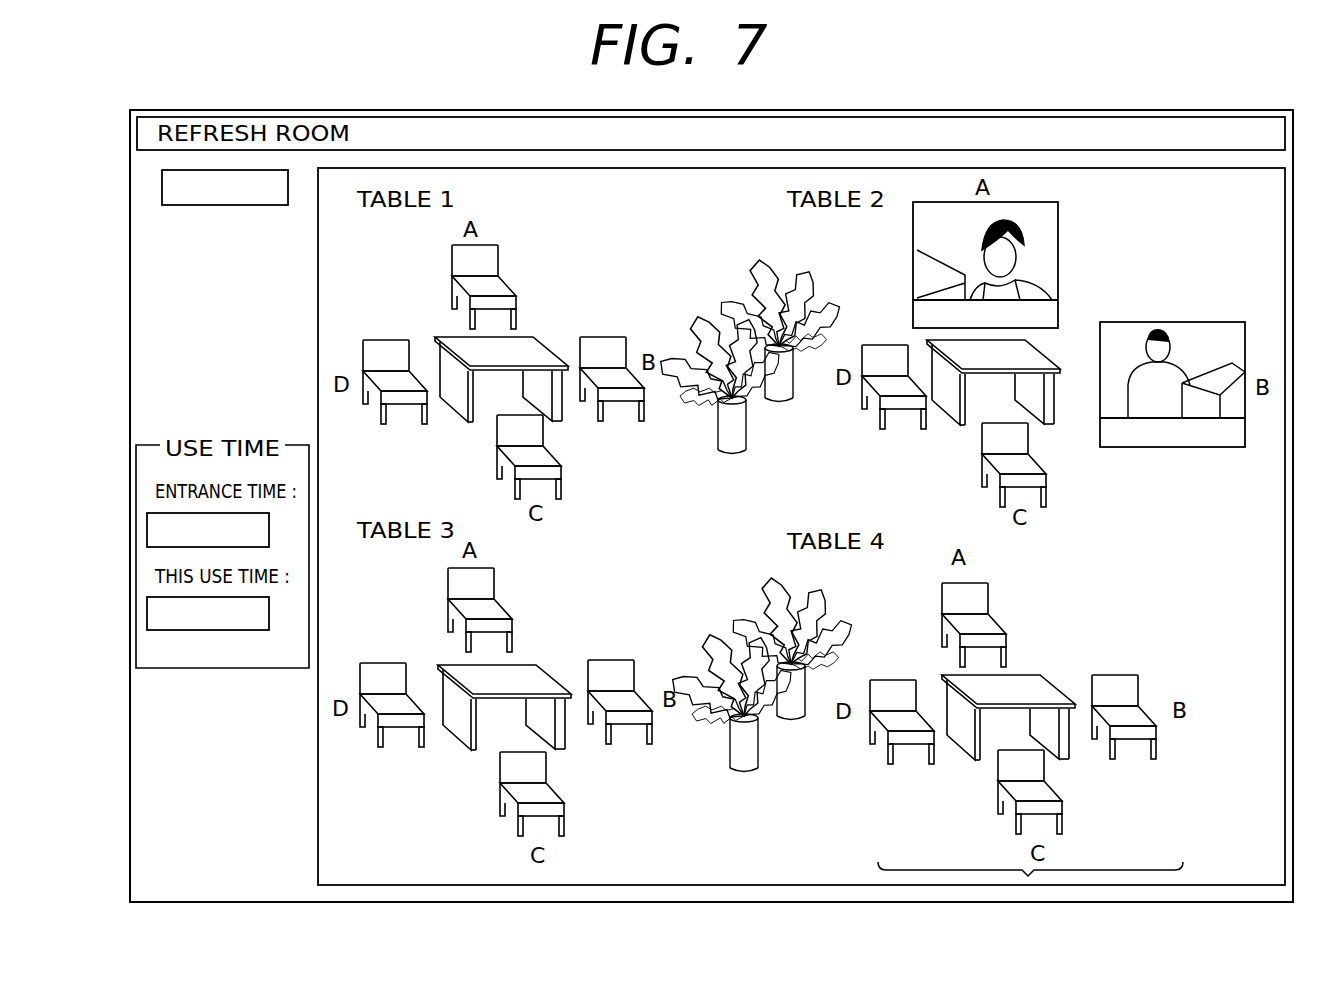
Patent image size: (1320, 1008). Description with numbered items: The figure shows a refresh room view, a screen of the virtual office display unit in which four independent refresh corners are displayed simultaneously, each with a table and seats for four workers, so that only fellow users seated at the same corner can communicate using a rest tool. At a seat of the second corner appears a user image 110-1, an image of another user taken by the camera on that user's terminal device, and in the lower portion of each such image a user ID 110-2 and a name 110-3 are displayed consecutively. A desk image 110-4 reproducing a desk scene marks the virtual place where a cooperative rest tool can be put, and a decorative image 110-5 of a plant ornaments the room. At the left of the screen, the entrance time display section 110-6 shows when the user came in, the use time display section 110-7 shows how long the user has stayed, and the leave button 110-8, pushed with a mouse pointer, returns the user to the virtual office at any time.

The user image 110-1 is at (1047, 237).
The user ID 110-2 is at (1130, 447).
The name 110-3 is at (1227, 447).
The desk image 110-4 is at (953, 405).
The decorative image 110-5 is at (704, 296).
The entrance time display section 110-6 is at (147, 535).
The use time display section 110-7 is at (147, 617).
The leave button 110-8 is at (162, 190).